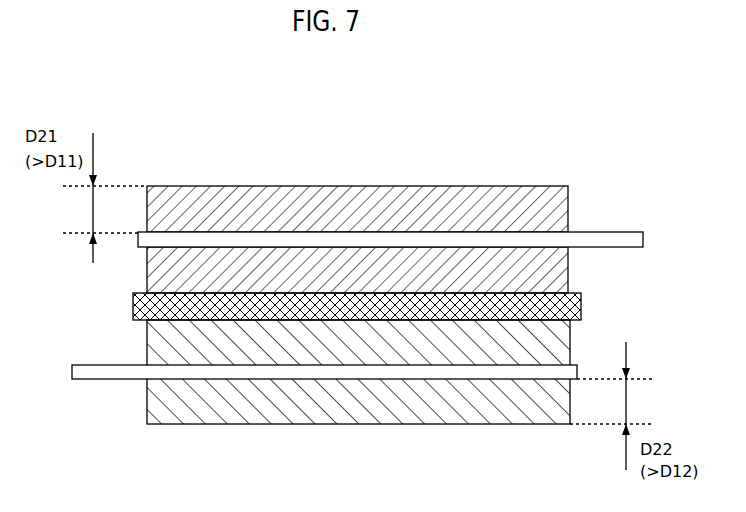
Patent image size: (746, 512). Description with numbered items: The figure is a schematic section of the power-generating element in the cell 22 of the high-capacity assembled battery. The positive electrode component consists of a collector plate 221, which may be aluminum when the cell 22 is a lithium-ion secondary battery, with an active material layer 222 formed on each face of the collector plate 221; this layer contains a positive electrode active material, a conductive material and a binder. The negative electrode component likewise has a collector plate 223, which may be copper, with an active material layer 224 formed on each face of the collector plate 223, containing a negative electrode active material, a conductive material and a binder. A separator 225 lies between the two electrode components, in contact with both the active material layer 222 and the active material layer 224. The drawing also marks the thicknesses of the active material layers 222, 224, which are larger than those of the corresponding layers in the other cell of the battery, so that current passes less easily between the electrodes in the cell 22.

The cell 22 is at (403, 306).
The collector plate 221 is at (607, 240).
The active material layer 222 is at (333, 276).
The collector plate 223 is at (111, 370).
The active material layer 224 is at (410, 337).
The separator 225 is at (582, 303).